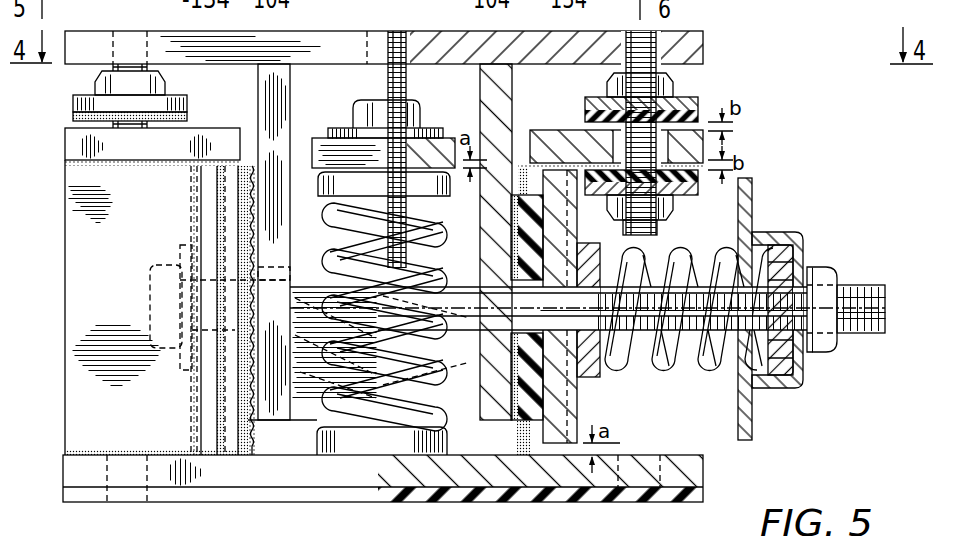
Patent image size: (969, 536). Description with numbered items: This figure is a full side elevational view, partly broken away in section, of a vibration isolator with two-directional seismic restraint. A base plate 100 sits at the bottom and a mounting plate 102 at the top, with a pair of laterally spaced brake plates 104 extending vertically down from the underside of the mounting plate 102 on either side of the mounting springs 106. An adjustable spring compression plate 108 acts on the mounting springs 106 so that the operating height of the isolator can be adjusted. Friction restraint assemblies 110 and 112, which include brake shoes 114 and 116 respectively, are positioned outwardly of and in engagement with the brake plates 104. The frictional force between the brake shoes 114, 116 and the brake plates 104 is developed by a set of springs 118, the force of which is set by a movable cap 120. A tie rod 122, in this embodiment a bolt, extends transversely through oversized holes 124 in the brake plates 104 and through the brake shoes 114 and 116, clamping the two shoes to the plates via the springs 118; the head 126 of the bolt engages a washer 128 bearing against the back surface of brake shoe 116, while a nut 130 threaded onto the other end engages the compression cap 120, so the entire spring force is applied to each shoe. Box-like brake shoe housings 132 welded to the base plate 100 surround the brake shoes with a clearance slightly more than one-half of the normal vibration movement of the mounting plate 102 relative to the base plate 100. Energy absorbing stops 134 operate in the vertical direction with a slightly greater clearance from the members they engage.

The base plate 100 is at (698, 469).
The mounting plate 102 is at (703, 44).
The brake plates 104 is at (280, 106).
The mounting springs 106 is at (453, 224).
The adjustable spring compression plate 108 is at (446, 150).
The friction restraint assembly 110 is at (580, 409).
The friction restraint assembly 112 is at (186, 391).
The brake shoe 114 is at (578, 388).
The brake shoe 116 is at (190, 199).
The springs 118 is at (744, 262).
The movable cap 120 is at (806, 240).
The tie rod 122 is at (859, 292).
The oversized holes 124 is at (293, 272).
The head 126 is at (152, 294).
The washer 128 is at (182, 247).
The nut 130 is at (826, 353).
The brake shoe housings 132 is at (64, 136).
The energy absorbing stops 134 is at (187, 108).